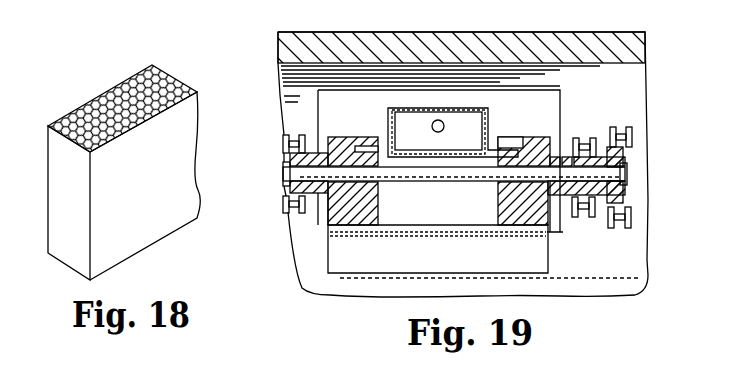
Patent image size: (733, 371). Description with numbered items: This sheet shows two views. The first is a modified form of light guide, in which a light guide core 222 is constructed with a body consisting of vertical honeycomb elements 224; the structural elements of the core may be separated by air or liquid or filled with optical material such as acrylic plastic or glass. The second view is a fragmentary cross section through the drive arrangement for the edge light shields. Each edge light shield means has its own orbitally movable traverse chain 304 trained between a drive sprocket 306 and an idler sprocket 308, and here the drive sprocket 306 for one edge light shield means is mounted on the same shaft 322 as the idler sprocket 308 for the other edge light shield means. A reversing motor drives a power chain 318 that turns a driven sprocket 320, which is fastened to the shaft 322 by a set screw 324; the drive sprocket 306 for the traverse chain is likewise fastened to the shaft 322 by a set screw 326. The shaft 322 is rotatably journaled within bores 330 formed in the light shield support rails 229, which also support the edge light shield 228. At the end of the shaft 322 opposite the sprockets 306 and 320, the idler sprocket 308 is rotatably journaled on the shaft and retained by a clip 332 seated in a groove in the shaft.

In FIG. 18, the light guide core 222 is at (62, 192).
In FIG. 18, the vertical honeycomb elements 224 is at (100, 111).
In FIG. 19, the edge light shield 228 is at (390, 119).
In FIG. 19, the light shield support rails 229 is at (362, 221).
In FIG. 19, the traverse chain 304 is at (285, 214).
In FIG. 19, the drive sprocket 306 is at (598, 218).
In FIG. 19, the idler sprocket 308 is at (288, 153).
In FIG. 19, the power chain 318 is at (613, 130).
In FIG. 19, the driven sprocket 320 is at (636, 148).
In FIG. 19, the shaft 322 is at (480, 182).
In FIG. 19, the set screw 324 is at (598, 158).
In FIG. 19, the set screw 326 is at (568, 160).
In FIG. 19, the bores 330 is at (358, 182).
In FIG. 19, the clip 332 is at (285, 181).